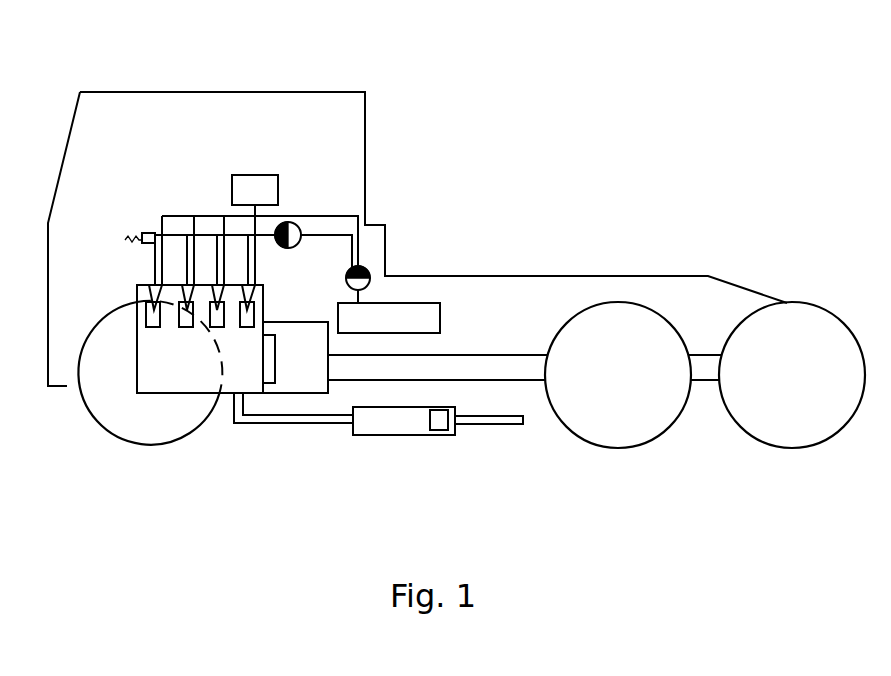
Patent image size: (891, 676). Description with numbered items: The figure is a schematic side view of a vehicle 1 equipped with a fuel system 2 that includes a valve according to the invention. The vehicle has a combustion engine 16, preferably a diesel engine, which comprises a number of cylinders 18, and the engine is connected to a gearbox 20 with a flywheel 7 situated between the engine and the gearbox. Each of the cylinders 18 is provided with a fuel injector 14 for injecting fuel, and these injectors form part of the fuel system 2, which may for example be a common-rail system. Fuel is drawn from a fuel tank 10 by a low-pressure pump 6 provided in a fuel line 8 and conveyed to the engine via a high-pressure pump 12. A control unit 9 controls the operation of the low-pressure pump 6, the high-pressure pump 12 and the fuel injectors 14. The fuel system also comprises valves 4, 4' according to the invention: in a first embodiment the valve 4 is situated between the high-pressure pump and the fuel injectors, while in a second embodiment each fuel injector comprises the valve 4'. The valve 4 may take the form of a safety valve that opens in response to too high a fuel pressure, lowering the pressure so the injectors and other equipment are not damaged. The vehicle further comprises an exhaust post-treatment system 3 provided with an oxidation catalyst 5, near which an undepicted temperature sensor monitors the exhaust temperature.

The vehicle 1 is at (458, 77).
The fuel system 2 is at (183, 190).
The exhaust post-treatment system 3 is at (405, 436).
The valve 4 is at (133, 199).
The valve 4' is at (113, 268).
The oxidation catalyst 5 is at (450, 436).
The low-pressure pump 6 is at (364, 272).
The flywheel 7 is at (277, 366).
The fuel line 8 is at (346, 223).
The control unit 9 is at (254, 176).
The fuel tank 10 is at (388, 303).
The high-pressure pump 12 is at (289, 221).
The fuel injector 14 is at (253, 274).
The combustion engine 16 is at (200, 339).
The cylinders 18 is at (251, 302).
The gearbox 20 is at (272, 322).